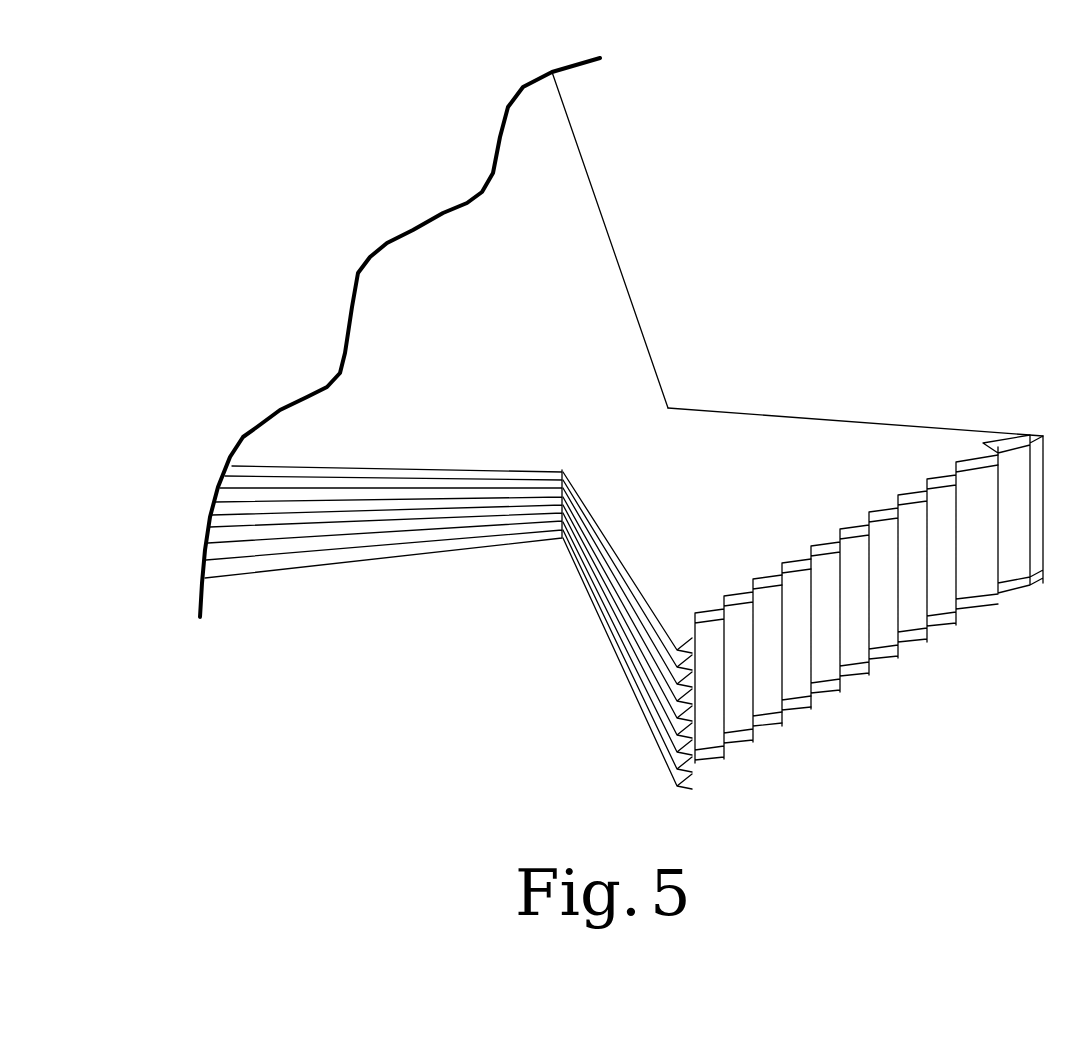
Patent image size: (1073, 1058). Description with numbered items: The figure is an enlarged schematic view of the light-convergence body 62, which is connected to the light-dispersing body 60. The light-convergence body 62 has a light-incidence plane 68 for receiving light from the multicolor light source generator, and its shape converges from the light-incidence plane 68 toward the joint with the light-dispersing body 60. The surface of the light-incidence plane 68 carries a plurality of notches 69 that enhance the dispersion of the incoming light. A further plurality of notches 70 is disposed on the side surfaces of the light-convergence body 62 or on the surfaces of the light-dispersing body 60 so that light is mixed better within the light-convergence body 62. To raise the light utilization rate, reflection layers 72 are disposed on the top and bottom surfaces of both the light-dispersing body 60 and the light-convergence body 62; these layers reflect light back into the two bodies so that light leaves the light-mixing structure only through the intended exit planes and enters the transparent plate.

The light-dispersing body 60 is at (640, 205).
The light-convergence body 62 is at (908, 338).
The light-incidence plane 68 is at (962, 591).
The notches 69 is at (797, 682).
The notches 70 is at (603, 587).
The reflection layers 72 is at (757, 442).